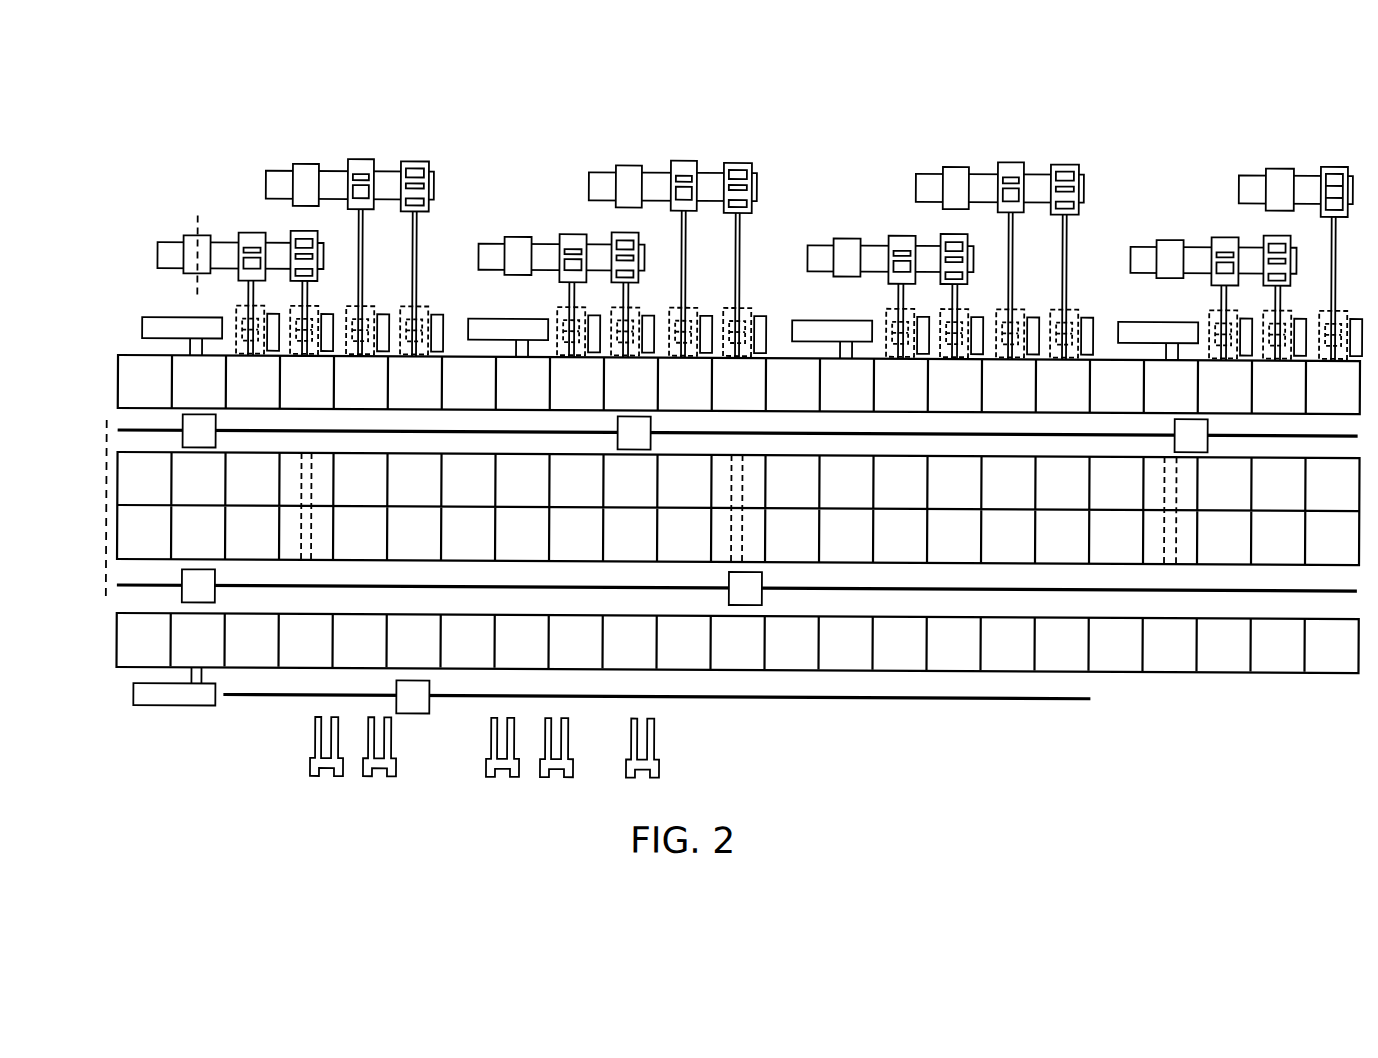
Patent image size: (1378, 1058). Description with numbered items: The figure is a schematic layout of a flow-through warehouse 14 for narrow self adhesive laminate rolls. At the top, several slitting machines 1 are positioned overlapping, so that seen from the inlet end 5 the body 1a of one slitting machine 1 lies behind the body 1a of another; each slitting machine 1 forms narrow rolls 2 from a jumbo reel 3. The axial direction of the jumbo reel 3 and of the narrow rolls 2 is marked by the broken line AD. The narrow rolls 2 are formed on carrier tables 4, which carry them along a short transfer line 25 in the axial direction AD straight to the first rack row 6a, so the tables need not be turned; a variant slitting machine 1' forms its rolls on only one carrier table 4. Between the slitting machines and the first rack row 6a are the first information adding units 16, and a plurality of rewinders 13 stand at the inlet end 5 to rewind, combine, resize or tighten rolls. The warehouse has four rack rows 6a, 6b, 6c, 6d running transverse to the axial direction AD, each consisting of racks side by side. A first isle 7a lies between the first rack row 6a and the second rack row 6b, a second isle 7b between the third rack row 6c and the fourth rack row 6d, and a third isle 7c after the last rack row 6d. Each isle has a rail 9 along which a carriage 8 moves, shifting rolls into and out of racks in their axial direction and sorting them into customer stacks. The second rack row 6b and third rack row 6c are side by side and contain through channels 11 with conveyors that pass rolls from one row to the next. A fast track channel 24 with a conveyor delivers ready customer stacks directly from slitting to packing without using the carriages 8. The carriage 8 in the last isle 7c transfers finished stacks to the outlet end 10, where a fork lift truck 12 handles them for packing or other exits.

The slitting machine 1 is at (735, 227).
The slitting machine with single carrier table 1' is at (1293, 240).
The body of slitting machine 1a is at (266, 183).
The narrow roll 2 is at (353, 167).
The jumbo reel 3 is at (305, 164).
The carrier table 4 is at (252, 279).
The inlet end 5 is at (772, 306).
The first rack row 6a is at (109, 380).
The second rack row 6b is at (109, 485).
The third rack row 6c is at (714, 578).
The fourth rack row 6d is at (111, 663).
The first isle 7a is at (96, 428).
The second isle 7b is at (111, 603).
The third isle 7c is at (259, 702).
The carriage 8 is at (198, 438).
The rail 9 is at (403, 433).
The outlet end 10 is at (737, 740).
The through channel 11 is at (1172, 519).
The fork lift truck 12 is at (330, 767).
The rewinder 13 is at (170, 322).
The flow-through warehouse 14 is at (1237, 760).
The first information adding unit 16 is at (440, 316).
The fast track channel 24 is at (102, 495).
The transfer line 25 is at (416, 228).
The axial direction AD is at (196, 216).